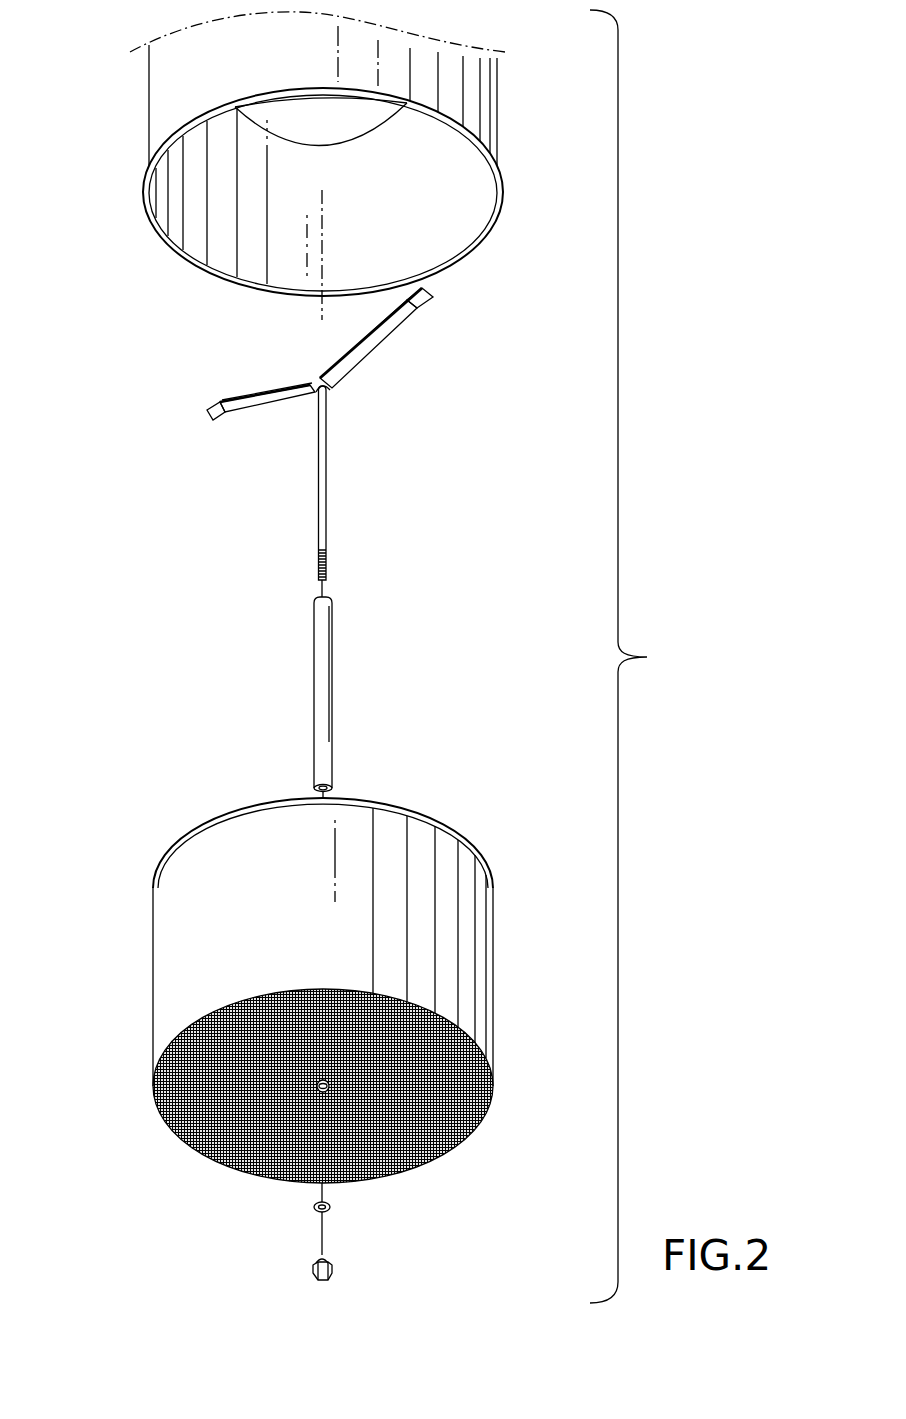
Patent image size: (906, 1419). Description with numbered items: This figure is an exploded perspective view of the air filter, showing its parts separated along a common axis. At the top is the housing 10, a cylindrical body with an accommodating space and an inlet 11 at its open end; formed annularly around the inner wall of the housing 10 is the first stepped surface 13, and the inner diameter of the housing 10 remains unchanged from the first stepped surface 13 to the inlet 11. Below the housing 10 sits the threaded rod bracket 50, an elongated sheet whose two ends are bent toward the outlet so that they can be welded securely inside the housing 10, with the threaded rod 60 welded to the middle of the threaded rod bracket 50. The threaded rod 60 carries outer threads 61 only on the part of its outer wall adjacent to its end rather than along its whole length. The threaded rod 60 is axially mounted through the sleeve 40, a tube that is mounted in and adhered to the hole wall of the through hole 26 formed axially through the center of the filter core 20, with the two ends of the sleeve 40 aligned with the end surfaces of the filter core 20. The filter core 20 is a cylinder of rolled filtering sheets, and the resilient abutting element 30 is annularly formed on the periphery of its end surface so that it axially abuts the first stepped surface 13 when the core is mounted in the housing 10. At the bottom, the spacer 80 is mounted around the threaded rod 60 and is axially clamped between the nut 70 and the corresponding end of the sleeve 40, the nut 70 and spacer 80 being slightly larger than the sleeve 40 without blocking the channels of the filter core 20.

The housing 10 is at (122, 136).
The inlet 11 is at (243, 240).
The first stepped surface 13 is at (383, 108).
The filter core 20 is at (513, 949).
The through hole 26 is at (405, 1175).
The resilient abutting element 30 is at (418, 816).
The sleeve 40 is at (327, 690).
The threaded rod bracket 50 is at (372, 345).
The threaded rod 60 is at (348, 506).
The outer threads 61 is at (326, 570).
The nut 70 is at (332, 1275).
The spacer 80 is at (330, 1210).